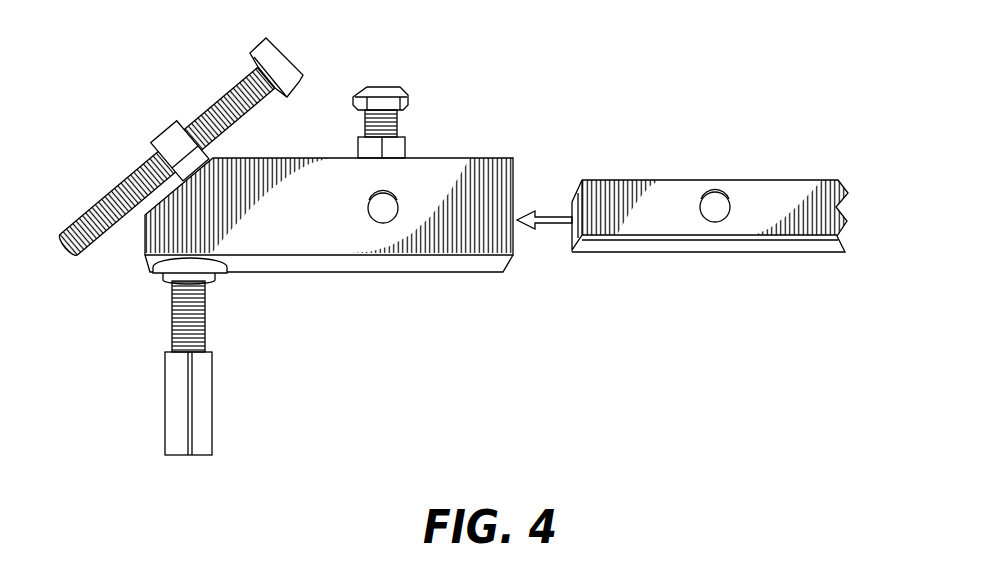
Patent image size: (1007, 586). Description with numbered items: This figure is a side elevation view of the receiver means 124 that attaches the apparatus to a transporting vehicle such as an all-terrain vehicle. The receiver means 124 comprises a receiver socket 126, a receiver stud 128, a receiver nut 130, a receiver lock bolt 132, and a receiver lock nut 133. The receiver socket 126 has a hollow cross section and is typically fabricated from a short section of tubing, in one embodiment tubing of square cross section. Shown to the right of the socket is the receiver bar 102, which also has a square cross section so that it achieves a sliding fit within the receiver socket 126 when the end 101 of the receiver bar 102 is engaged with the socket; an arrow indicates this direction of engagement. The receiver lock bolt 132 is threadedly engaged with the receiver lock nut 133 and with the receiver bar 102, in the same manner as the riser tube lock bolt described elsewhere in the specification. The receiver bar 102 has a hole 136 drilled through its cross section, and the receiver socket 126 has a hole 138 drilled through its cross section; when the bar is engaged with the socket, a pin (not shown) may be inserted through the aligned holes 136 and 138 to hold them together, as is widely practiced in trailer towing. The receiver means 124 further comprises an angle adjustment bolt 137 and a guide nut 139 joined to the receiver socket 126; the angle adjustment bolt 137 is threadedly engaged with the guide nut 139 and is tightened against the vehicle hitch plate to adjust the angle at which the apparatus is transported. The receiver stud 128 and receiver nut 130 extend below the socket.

The end of receiver bar 101 is at (576, 204).
The receiver bar 102 is at (683, 178).
The receiver means 124 is at (318, 135).
The receiver socket 126 is at (467, 260).
The receiver stud 128 is at (205, 320).
The receiver nut 130 is at (205, 412).
The receiver lock bolt 132 is at (382, 87).
The receiver lock nut 133 is at (402, 145).
The hole 136 is at (713, 210).
The angle adjustment bolt 137 is at (222, 96).
The hole 138 is at (380, 212).
The guide nut 139 is at (165, 130).